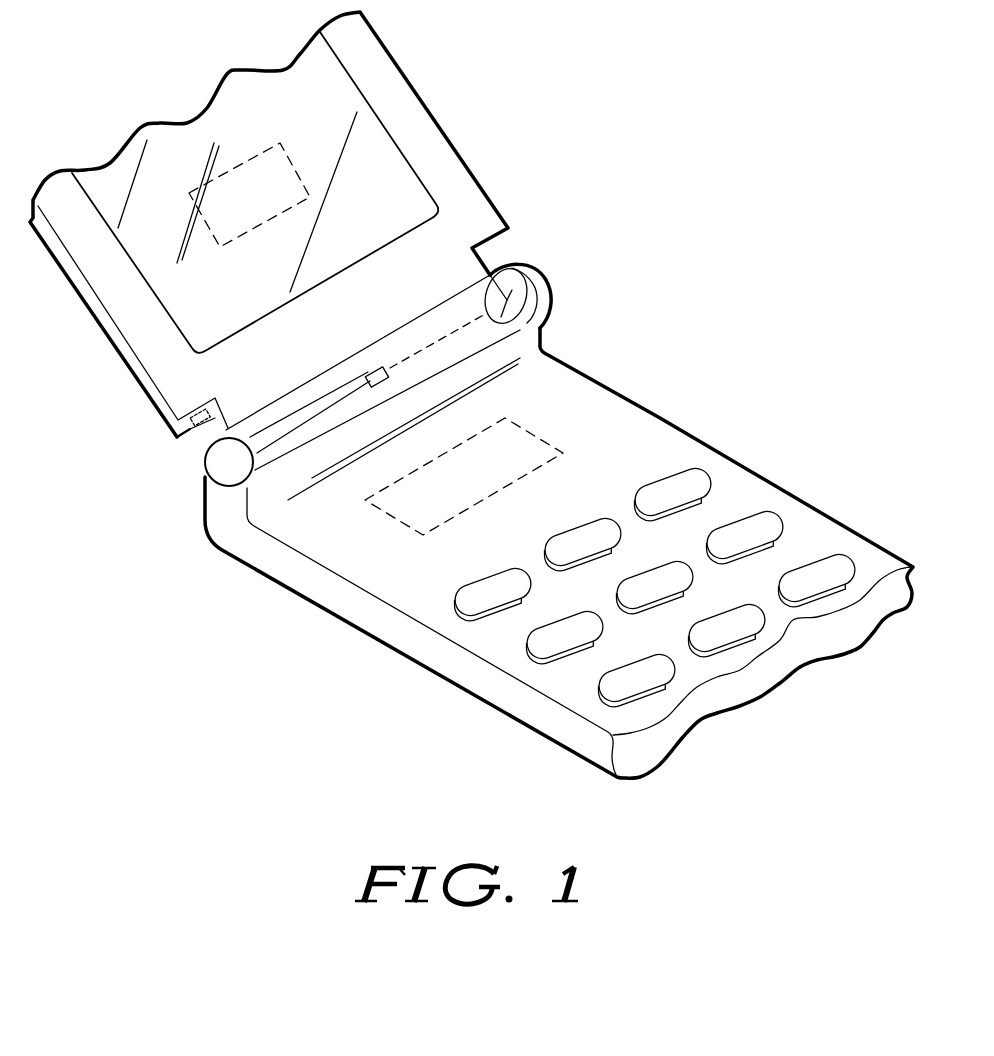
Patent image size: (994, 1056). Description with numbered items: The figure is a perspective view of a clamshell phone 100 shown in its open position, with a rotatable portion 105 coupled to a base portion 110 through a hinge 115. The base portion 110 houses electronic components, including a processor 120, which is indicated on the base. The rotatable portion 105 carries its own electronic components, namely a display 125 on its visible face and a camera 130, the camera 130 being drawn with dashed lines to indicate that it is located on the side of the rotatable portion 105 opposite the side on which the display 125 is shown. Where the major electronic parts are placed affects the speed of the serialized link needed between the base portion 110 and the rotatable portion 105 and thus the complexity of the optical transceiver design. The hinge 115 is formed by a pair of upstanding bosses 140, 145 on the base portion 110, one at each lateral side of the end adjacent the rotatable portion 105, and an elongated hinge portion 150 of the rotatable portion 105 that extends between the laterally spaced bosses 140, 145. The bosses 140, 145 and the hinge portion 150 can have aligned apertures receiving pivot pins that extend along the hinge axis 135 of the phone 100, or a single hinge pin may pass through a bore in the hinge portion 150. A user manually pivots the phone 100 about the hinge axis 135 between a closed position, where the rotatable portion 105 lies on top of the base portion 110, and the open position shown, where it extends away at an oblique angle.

The phone 100 is at (676, 92).
The rotatable portion 105 is at (452, 143).
The base portion 110 is at (697, 441).
The hinge 115 is at (491, 275).
The processor 120 is at (541, 440).
The display 125 is at (378, 115).
The camera 130 is at (256, 150).
The hinge axis 135 is at (522, 266).
The upstanding boss 140 is at (215, 460).
The upstanding boss 145 is at (553, 297).
The elongated hinge portion 150 is at (358, 420).